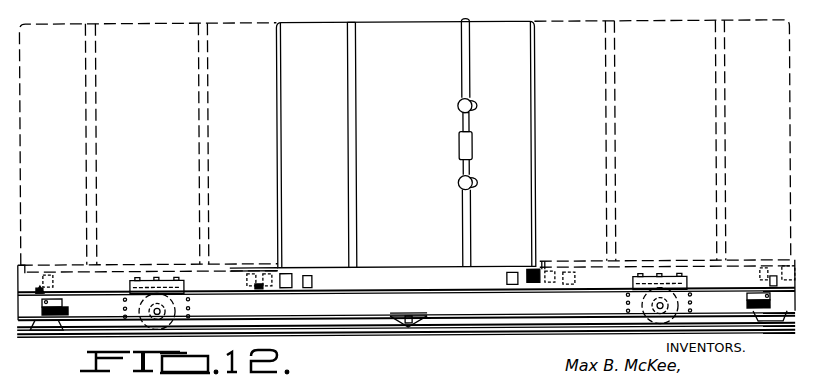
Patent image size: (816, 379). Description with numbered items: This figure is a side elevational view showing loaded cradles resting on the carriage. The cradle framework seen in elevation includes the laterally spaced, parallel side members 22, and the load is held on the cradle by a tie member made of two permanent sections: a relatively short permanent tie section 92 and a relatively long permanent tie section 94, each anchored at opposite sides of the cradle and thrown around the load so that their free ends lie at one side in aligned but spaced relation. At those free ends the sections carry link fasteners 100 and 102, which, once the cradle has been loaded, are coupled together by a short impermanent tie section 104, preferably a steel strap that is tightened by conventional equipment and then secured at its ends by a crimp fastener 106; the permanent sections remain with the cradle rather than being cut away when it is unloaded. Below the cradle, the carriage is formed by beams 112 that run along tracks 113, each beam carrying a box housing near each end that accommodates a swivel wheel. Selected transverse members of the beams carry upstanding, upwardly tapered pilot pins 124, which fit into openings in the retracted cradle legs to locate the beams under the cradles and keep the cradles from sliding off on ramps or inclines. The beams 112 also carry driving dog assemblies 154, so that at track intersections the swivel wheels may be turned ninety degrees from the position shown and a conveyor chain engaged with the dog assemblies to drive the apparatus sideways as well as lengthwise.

The side members 22 is at (356, 292).
The permanent tie section 92 is at (472, 222).
The permanent tie section 94 is at (472, 66).
The link fastener 100 is at (460, 183).
The link fastener 102 is at (459, 106).
The impermanent tie section 104 is at (471, 126).
The crimp fastener 106 is at (460, 145).
The beams 112 is at (372, 314).
The tracks 113 is at (527, 331).
The pilot pins 124 is at (40, 289).
The driving dog assemblies 154 is at (408, 328).